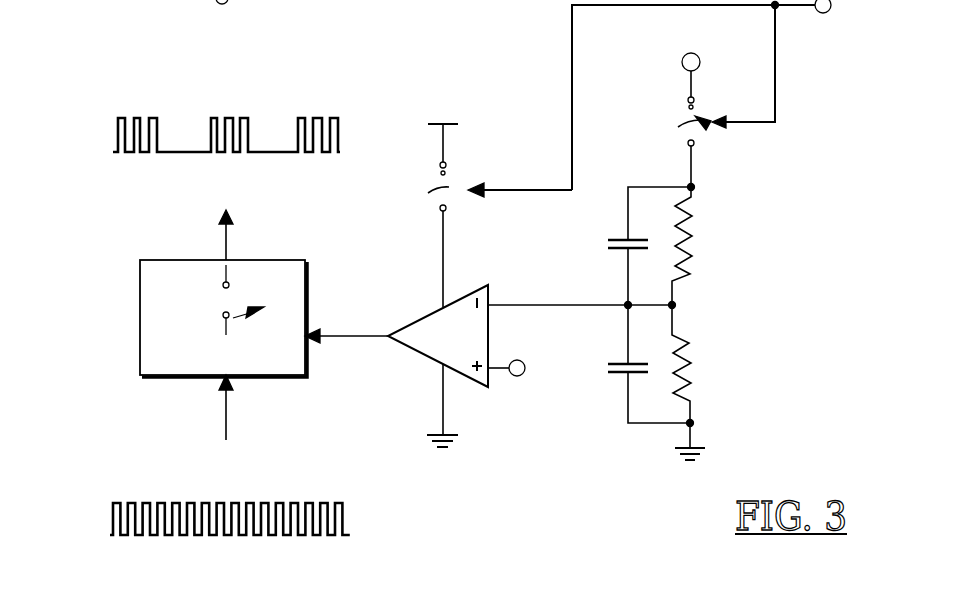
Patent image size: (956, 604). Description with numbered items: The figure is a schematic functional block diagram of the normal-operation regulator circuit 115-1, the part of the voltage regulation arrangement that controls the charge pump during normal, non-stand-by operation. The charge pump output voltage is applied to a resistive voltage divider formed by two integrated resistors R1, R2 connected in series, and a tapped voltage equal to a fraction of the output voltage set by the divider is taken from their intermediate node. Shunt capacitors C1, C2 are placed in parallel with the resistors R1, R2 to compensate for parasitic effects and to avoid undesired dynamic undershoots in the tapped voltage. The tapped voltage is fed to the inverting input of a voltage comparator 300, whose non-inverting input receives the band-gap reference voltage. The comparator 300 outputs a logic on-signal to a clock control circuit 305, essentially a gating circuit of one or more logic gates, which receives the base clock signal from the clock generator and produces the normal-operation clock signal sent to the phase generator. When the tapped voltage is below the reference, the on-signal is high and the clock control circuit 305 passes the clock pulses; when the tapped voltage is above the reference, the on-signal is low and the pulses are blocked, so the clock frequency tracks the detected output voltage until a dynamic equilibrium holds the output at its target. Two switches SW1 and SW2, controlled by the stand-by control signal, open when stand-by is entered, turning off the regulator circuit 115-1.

The normal-operation regulator circuit 115-1 is at (132, 61).
The clock control circuit 305 is at (137, 345).
The voltage comparator 300 is at (418, 354).
The switch SW1 is at (702, 135).
The switch SW2 is at (445, 191).
The shunt capacitor C1 is at (612, 245).
The shunt capacitor C2 is at (618, 380).
The integrated resistor R1 is at (690, 237).
The integrated resistor R2 is at (688, 373).